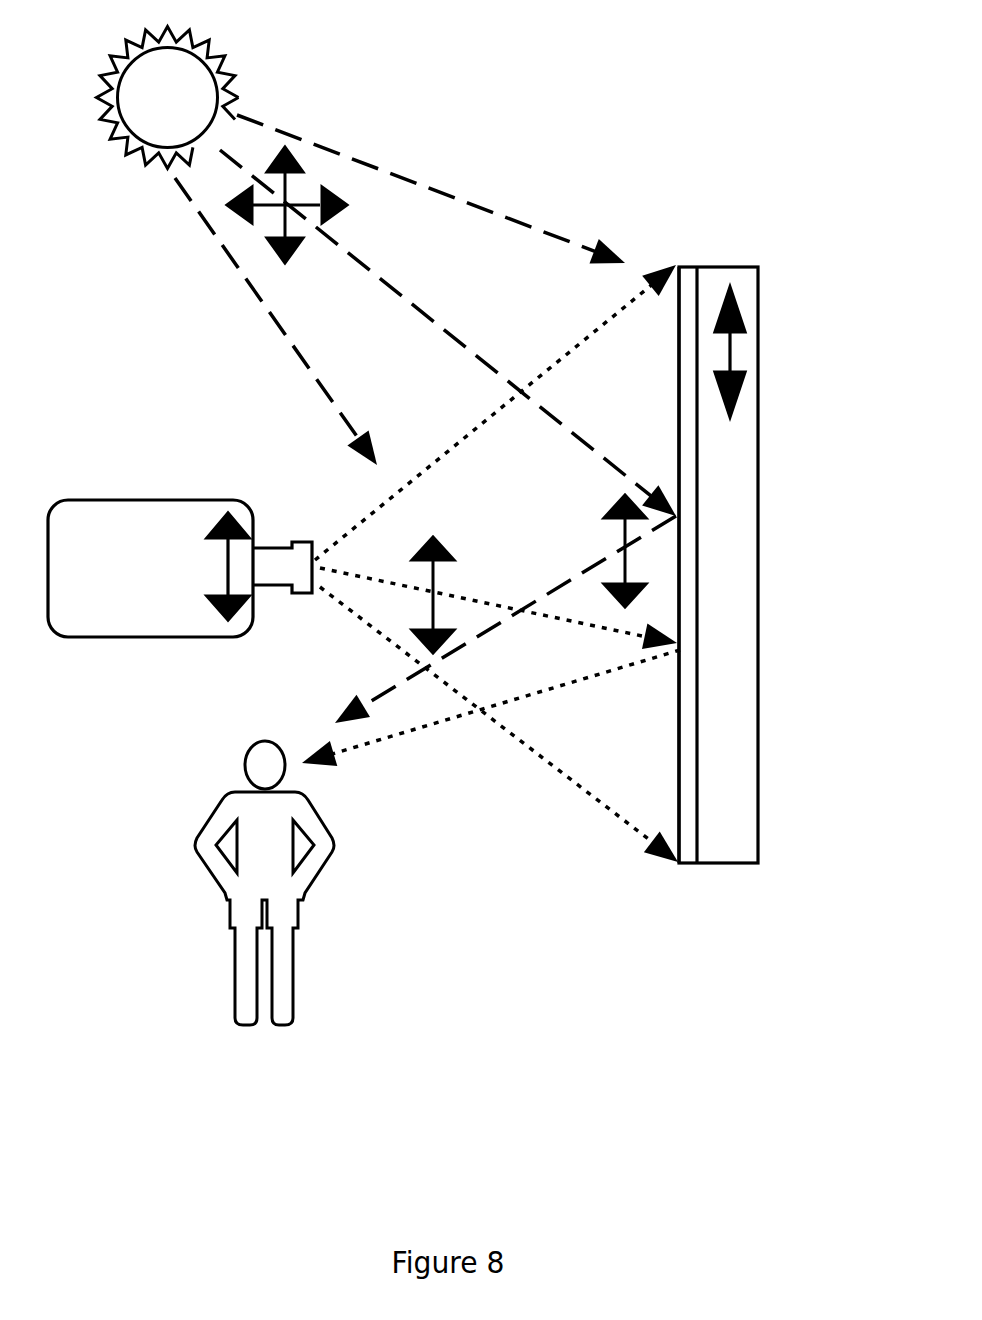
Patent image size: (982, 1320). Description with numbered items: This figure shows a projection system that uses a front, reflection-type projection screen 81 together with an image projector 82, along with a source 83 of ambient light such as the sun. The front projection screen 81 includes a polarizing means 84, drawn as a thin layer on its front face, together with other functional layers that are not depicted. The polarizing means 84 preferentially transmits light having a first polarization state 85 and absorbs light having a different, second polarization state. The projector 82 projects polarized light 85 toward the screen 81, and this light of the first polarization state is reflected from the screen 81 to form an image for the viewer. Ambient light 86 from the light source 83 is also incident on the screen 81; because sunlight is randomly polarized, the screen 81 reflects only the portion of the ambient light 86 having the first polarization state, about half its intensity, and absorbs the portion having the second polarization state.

The front projection screen 81 is at (733, 805).
The image projector 82 is at (180, 568).
The source of ambient light 83 is at (195, 92).
The polarizing means 84 is at (688, 283).
The polarized light of first polarization state 85 is at (433, 592).
The ambient light 86 is at (284, 205).